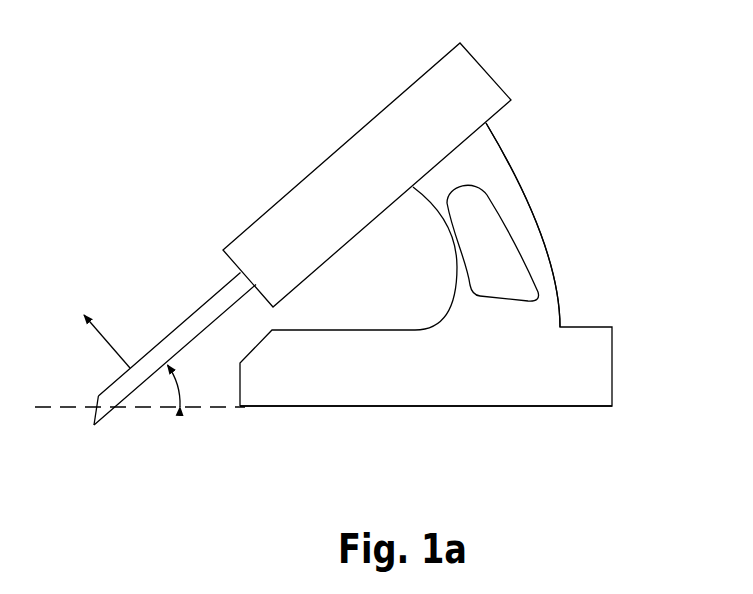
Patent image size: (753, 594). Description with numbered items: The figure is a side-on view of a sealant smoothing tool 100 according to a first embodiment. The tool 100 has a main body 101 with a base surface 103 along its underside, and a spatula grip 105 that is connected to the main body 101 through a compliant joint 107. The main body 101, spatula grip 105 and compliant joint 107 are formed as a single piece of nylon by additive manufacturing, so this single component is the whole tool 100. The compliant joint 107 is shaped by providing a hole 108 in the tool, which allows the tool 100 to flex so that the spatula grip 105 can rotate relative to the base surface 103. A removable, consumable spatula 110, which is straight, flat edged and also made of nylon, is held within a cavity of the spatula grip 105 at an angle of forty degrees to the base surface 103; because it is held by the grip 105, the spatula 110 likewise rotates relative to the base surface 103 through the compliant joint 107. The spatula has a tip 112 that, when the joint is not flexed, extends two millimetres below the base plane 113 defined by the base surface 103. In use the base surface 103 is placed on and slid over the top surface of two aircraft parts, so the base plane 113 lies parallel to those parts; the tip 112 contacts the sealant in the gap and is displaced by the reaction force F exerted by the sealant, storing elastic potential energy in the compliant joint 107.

The sealant smoothing tool 100 is at (265, 100).
The main body 101 is at (613, 370).
The base surface 103 is at (580, 407).
The spatula grip 105 is at (415, 95).
The compliant joint 107 is at (533, 232).
The hole 108 is at (498, 267).
The spatula 110 is at (208, 303).
The tip 112 is at (93, 416).
The base plane 113 is at (212, 408).
The reaction force F is at (110, 356).